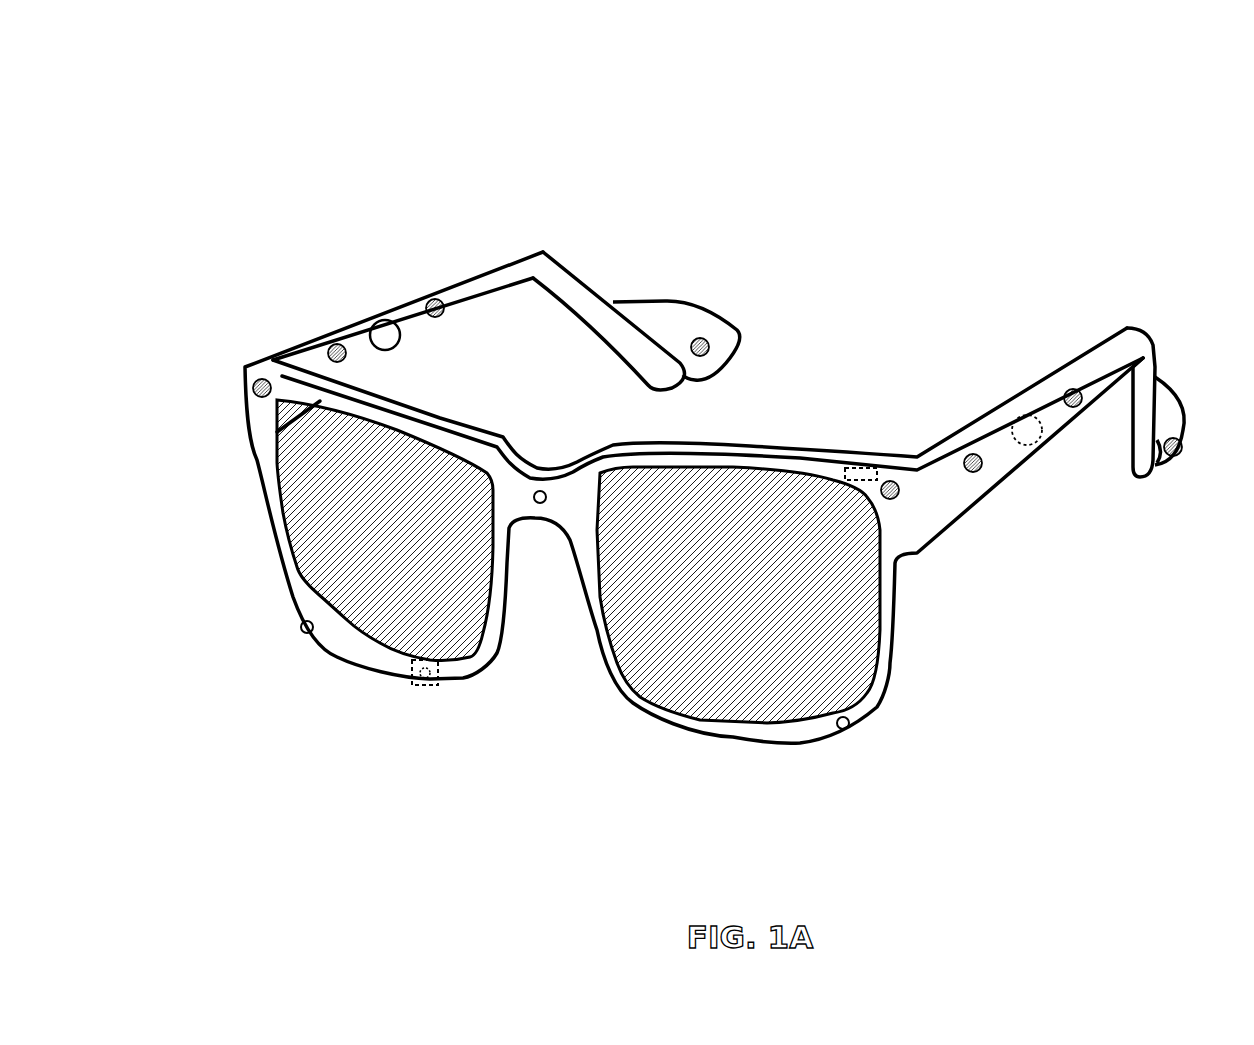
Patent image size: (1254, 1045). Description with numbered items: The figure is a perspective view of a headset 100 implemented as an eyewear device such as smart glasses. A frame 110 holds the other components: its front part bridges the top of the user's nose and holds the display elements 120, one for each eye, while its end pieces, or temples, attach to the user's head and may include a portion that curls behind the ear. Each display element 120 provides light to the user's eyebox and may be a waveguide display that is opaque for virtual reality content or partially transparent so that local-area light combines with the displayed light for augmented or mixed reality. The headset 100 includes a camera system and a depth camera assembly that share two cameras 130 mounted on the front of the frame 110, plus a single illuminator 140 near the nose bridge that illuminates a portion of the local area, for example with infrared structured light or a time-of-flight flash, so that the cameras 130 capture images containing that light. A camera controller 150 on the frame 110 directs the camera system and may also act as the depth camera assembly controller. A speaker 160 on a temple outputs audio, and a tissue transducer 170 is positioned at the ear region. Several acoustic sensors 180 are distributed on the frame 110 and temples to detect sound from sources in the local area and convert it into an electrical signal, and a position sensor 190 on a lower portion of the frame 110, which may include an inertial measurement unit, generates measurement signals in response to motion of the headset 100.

The headset 100 is at (143, 81).
The frame 110 is at (1138, 322).
The display element 120 is at (327, 530).
The camera 130 is at (299, 632).
The illuminator 140 is at (537, 503).
The camera controller 150 is at (858, 468).
The speaker 160 is at (392, 322).
The tissue transducer 170 is at (658, 307).
The acoustic sensor 180 is at (263, 380).
The position sensor 190 is at (423, 677).